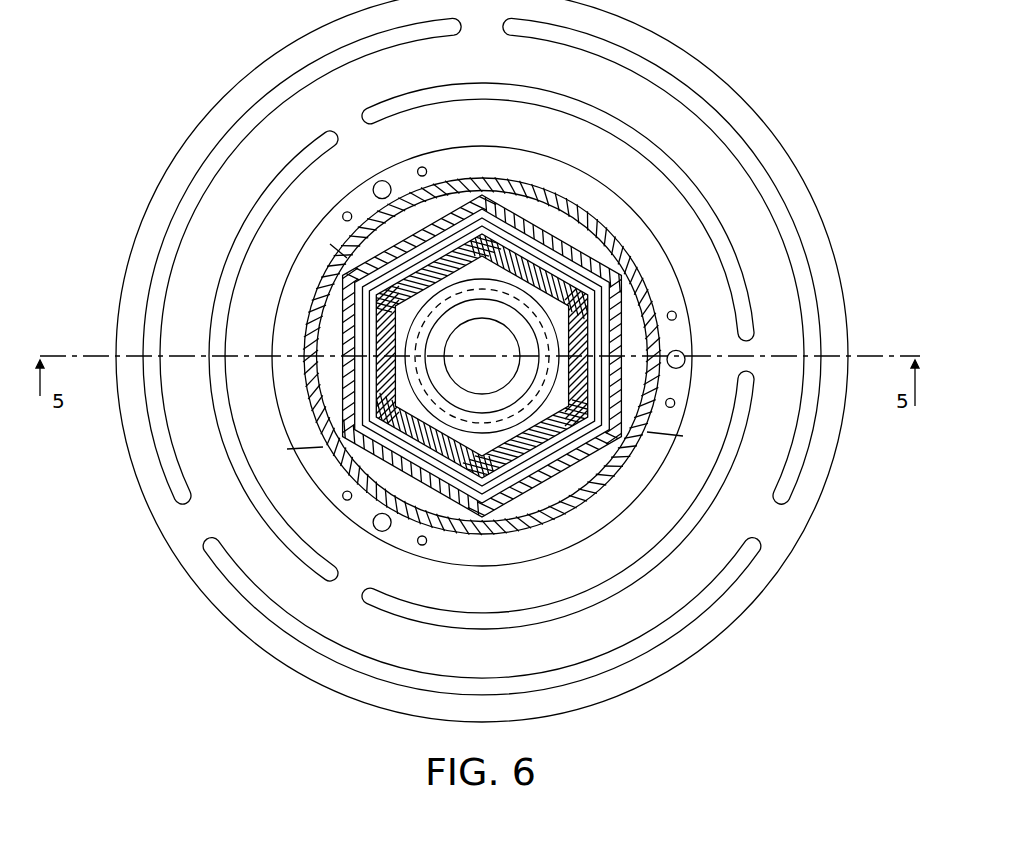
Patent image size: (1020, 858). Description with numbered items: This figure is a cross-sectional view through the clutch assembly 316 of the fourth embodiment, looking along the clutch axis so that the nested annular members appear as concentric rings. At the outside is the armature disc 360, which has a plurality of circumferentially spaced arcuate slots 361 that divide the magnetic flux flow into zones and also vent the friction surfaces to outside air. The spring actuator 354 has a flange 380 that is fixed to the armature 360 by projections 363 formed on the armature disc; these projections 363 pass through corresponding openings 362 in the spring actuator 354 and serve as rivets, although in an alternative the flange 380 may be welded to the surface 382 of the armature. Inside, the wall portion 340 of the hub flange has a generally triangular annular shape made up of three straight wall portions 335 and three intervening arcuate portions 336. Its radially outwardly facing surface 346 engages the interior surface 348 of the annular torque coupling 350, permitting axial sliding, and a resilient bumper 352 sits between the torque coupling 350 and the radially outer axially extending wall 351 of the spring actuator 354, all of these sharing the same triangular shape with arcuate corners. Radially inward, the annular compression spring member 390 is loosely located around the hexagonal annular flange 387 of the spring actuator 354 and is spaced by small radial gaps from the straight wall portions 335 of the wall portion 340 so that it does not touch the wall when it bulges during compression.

The clutch assembly 316 is at (138, 128).
The armature disc 360 is at (146, 236).
The surface of the armature 382 is at (775, 557).
The arcuate slots 361 is at (540, 627).
The flange 380 is at (529, 162).
The openings 362 is at (690, 353).
The projections 363 is at (383, 522).
The straight wall portions 335 is at (453, 235).
The arcuate portions 336 is at (585, 232).
The resilient bumper 352 is at (617, 268).
The torque coupling 350 is at (637, 385).
The spring actuator 354 is at (317, 307).
The annular compression spring member 390 is at (385, 377).
The radially outwardly facing surface 346 is at (455, 508).
The radially outer axially extending wall 351 is at (323, 393).
The interior surface 348 is at (470, 493).
The annular flange 387 is at (393, 280).
The wall portion 340 is at (505, 492).